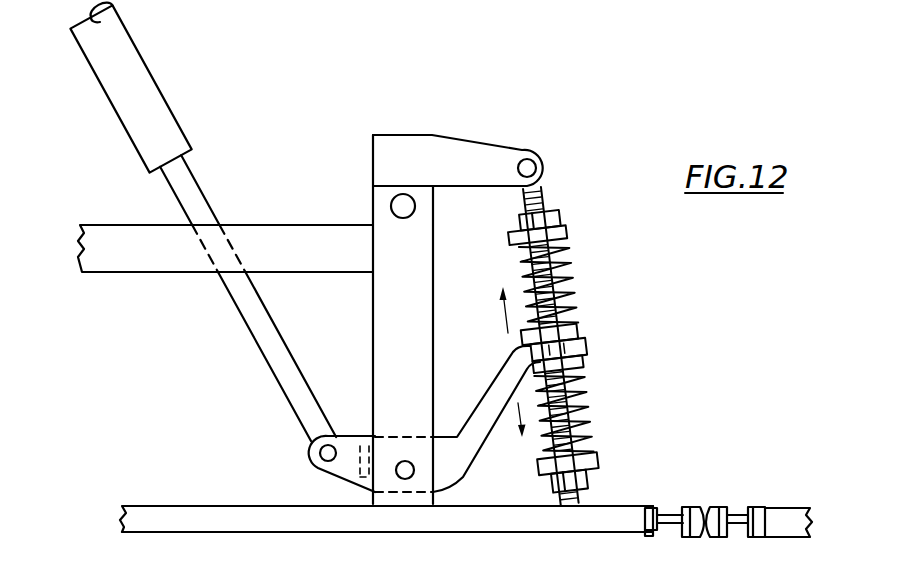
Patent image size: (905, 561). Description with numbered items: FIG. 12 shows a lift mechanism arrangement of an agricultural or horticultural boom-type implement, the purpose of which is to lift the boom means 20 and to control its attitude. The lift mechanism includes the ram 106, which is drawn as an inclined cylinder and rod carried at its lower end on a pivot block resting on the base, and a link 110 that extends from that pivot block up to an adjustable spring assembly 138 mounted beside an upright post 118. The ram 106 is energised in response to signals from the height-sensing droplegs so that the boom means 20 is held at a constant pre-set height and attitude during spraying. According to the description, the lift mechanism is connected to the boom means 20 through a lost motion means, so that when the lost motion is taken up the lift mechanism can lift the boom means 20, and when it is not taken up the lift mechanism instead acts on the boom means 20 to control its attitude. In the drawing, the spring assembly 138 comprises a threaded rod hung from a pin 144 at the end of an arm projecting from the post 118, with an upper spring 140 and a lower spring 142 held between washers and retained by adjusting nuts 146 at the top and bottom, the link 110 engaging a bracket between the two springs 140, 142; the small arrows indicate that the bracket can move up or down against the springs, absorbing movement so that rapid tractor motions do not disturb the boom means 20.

The boom means 20 is at (150, 490).
The ram 106 is at (155, 110).
The lift mechanism element 110 is at (457, 448).
The support column 118 is at (390, 355).
The spring adjuster assembly 138 is at (600, 279).
The upper compression spring 140 is at (562, 298).
The lower compression spring 142 is at (577, 407).
The pivot pin 144 is at (545, 193).
The adjusting nut 146 is at (553, 217).